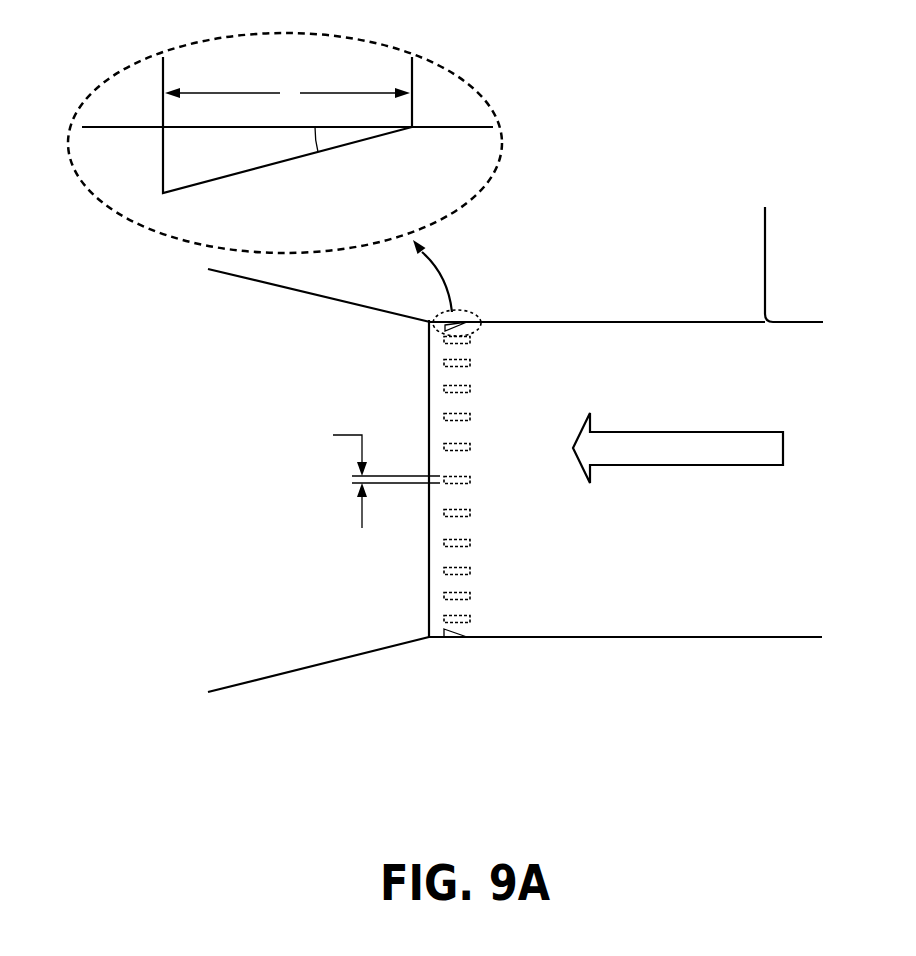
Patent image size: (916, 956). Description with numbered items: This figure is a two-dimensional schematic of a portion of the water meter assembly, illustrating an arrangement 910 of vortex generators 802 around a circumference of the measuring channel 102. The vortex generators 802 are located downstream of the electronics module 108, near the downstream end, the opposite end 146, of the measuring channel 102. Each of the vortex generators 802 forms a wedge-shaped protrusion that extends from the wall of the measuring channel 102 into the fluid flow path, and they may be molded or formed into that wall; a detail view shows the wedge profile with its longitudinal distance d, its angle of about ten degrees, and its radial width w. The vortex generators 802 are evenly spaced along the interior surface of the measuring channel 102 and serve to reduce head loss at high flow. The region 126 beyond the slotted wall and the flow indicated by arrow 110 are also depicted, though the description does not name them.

The arrangement 910 is at (797, 86).
The electronics module 108 is at (782, 281).
The measuring channel 102 is at (603, 634).
The opposite end 146 is at (429, 567).
The chamber 126 is at (210, 429).
The vortex generators 802 is at (493, 424).
The flow direction 110 is at (678, 448).